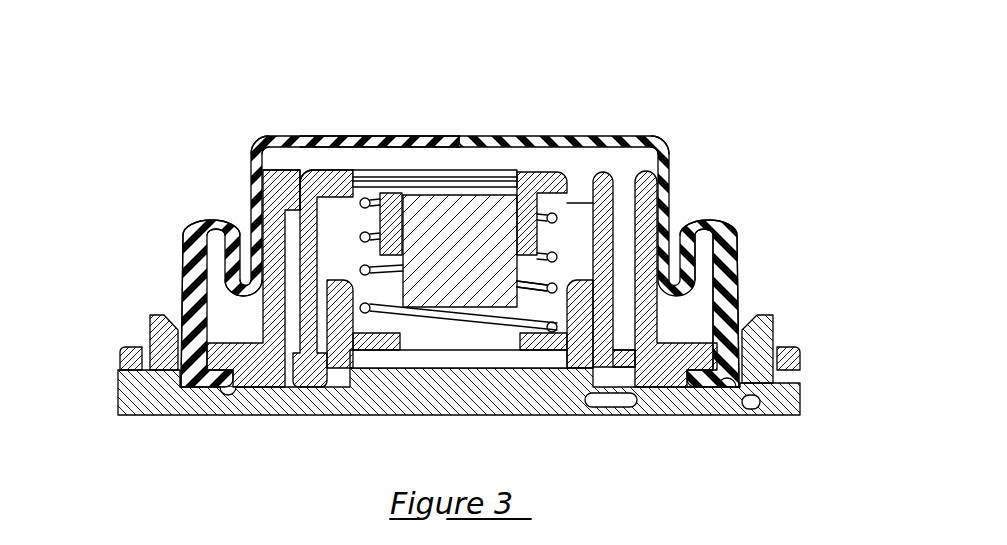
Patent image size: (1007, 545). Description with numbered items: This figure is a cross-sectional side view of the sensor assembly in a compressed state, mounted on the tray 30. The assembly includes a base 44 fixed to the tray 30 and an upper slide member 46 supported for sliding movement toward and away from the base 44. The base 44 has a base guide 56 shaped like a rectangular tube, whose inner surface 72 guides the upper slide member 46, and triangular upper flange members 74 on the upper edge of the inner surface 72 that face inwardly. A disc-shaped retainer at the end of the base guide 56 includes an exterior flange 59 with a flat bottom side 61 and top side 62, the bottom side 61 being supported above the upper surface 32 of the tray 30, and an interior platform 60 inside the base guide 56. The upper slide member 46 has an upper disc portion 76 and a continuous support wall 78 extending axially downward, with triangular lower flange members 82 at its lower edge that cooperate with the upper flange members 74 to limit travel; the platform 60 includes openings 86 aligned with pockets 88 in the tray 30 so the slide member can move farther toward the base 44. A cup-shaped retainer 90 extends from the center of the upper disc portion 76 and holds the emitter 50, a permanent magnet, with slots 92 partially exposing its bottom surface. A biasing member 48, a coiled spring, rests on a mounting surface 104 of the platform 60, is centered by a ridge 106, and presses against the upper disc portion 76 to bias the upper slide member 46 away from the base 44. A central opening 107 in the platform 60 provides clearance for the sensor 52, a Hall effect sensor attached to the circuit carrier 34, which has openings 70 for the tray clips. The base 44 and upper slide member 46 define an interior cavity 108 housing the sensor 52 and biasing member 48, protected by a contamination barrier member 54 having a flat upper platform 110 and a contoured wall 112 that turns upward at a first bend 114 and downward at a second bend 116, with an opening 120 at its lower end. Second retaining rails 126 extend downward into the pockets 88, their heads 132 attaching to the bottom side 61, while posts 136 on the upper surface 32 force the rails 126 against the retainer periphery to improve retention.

The tray 30 is at (778, 394).
The upper surface 32 is at (800, 348).
The circuit carrier 34 is at (400, 357).
The base 44 is at (262, 325).
The upper slide member 46 is at (313, 168).
The biasing member 48 is at (310, 183).
The emitter 50 is at (462, 228).
The sensor 52 is at (430, 337).
The contamination barrier member 54 is at (313, 138).
The base guide 56 is at (280, 222).
The exterior flange 59 is at (700, 330).
The interior platform 60 is at (607, 180).
The bottom side 61 is at (698, 373).
The top side 62 is at (735, 272).
The openings 70 is at (143, 348).
The inner surface 72 is at (293, 240).
The upper flange members 74 is at (630, 185).
The upper disc portion 76 is at (547, 183).
The support wall 78 is at (640, 243).
The lower flange members 82 is at (630, 385).
The openings 86 is at (582, 345).
The pockets 88 is at (605, 407).
The retainer 90 is at (395, 222).
The slots 92 is at (372, 340).
The mounting surface 104 is at (490, 330).
The ridge 106 is at (580, 282).
The opening 107 is at (518, 345).
The interior cavity 108 is at (378, 300).
The upper platform 110 is at (342, 142).
The wall 112 is at (257, 155).
The first bend 114 is at (183, 282).
The second bend 116 is at (212, 218).
The opening 120 is at (250, 388).
The second retaining rails 126 is at (760, 315).
The head 132 is at (732, 390).
The posts 136 is at (160, 327).